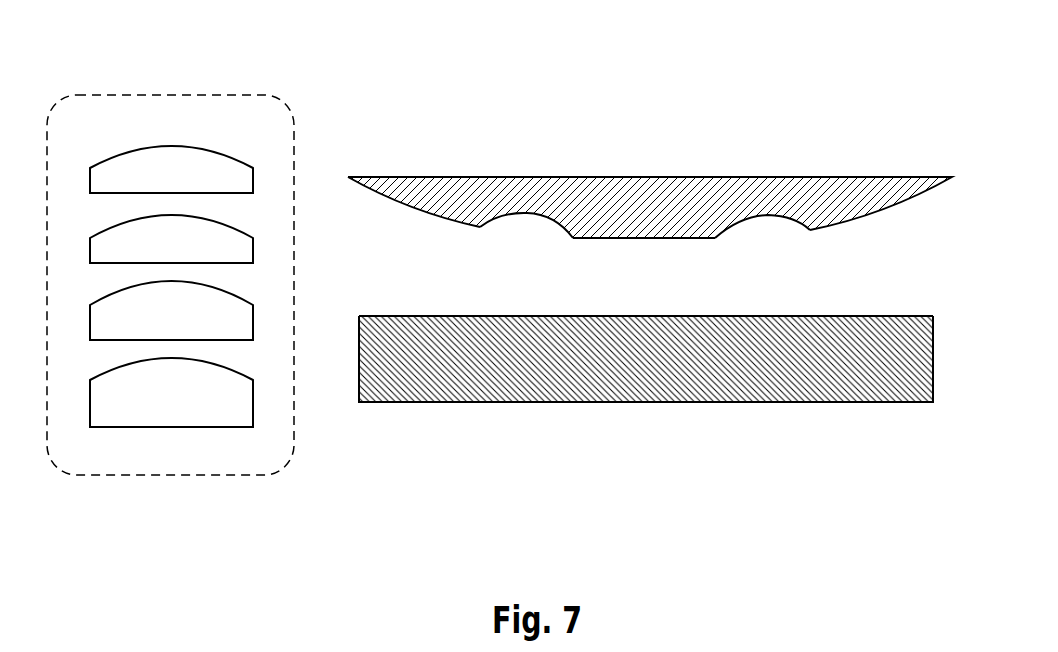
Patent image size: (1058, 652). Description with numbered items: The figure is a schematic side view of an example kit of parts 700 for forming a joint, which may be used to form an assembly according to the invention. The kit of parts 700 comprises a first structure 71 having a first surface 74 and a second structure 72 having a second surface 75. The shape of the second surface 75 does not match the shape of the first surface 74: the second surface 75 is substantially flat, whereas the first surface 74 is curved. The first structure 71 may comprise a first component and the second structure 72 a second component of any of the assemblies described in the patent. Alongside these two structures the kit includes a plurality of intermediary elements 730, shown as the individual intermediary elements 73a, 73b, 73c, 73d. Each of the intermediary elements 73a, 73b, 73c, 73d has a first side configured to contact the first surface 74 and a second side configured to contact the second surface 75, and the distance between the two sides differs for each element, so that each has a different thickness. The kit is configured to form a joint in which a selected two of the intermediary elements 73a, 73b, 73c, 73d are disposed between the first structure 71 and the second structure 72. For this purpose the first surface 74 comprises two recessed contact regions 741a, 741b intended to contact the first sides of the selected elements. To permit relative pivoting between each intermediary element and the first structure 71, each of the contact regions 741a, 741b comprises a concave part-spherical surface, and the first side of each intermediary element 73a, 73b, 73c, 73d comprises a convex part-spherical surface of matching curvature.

The kit of parts 700 is at (627, 59).
The first structure 71 is at (728, 197).
The first surface 74 is at (643, 238).
The contact region 741a is at (507, 213).
The contact region 741b is at (770, 215).
The second structure 72 is at (662, 367).
The second surface 75 is at (544, 316).
The plurality of intermediary elements 730 is at (288, 453).
The intermediary element 73a is at (192, 182).
The intermediary element 73b is at (192, 252).
The intermediary element 73c is at (192, 326).
The intermediary element 73d is at (192, 406).